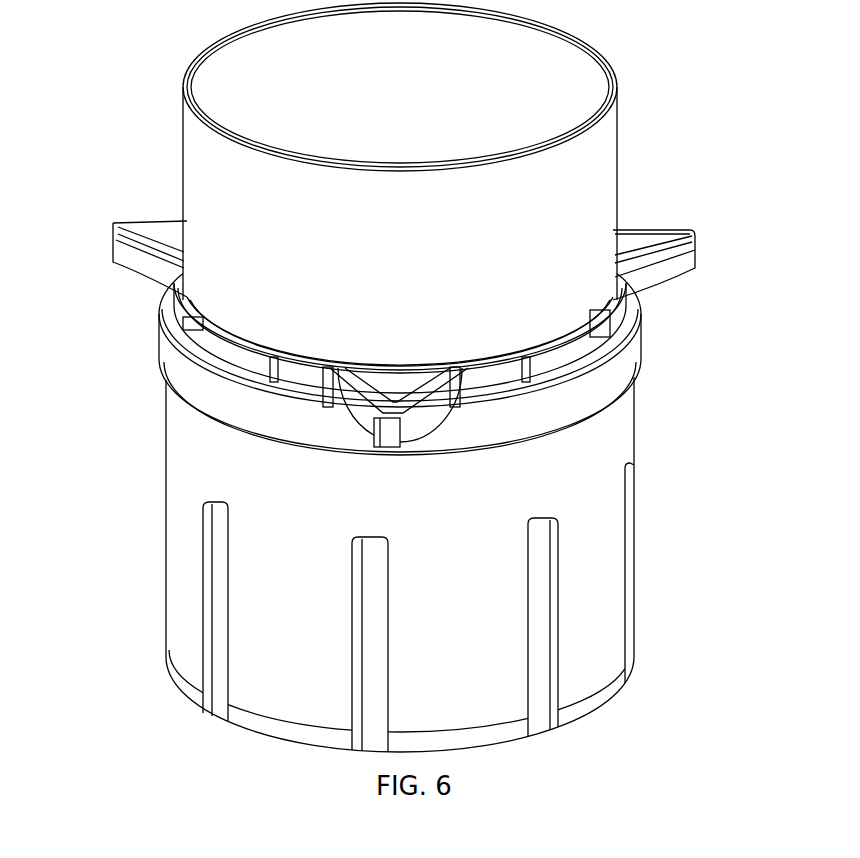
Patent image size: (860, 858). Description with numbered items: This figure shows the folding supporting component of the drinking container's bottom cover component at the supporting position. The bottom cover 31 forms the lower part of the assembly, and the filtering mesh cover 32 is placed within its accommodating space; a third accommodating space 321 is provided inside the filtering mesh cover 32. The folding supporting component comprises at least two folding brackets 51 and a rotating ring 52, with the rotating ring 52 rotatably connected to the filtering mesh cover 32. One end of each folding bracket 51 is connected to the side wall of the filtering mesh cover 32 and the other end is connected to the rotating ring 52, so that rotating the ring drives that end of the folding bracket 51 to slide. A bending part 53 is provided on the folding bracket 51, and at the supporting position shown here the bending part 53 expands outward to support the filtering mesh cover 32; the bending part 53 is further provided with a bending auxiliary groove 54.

The bottom cover 31 is at (187, 542).
The filtering mesh cover 32 is at (220, 181).
The third accommodating space 321 is at (290, 122).
The folding bracket 51 is at (270, 372).
The rotating ring 52 is at (168, 354).
The bending part 53 is at (390, 439).
The bending auxiliary groove 54 is at (415, 389).